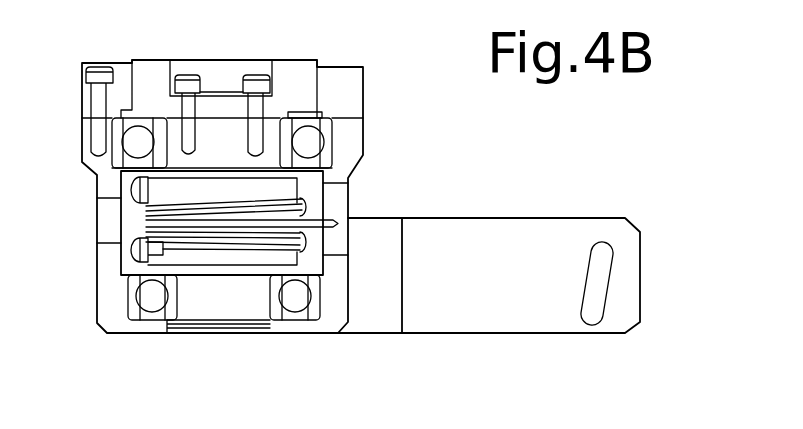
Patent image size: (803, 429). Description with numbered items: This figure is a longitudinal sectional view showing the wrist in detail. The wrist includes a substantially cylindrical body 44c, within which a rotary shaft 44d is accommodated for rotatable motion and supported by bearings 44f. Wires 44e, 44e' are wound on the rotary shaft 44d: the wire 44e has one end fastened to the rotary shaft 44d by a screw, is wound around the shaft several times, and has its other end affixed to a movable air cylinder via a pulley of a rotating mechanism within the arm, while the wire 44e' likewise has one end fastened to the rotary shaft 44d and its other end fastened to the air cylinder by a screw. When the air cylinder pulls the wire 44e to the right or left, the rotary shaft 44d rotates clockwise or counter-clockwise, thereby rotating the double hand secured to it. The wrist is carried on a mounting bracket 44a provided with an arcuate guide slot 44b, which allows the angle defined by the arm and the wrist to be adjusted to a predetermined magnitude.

The mounting bracket 44a is at (563, 227).
The arcuate guide slot 44b is at (608, 278).
The cylindrical body 44c is at (354, 66).
The rotary shaft 44d is at (245, 258).
The wire 44e is at (292, 188).
The wire 44e' is at (395, 202).
The bearings 44f is at (313, 140).